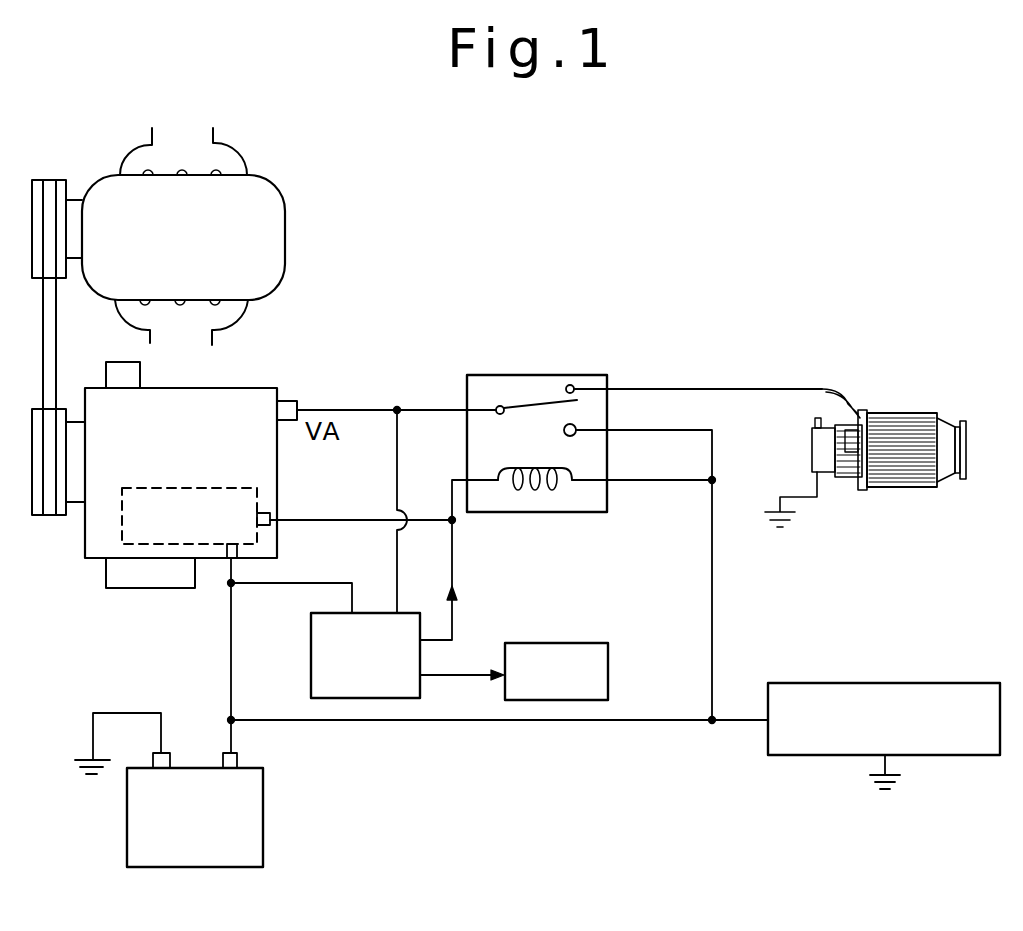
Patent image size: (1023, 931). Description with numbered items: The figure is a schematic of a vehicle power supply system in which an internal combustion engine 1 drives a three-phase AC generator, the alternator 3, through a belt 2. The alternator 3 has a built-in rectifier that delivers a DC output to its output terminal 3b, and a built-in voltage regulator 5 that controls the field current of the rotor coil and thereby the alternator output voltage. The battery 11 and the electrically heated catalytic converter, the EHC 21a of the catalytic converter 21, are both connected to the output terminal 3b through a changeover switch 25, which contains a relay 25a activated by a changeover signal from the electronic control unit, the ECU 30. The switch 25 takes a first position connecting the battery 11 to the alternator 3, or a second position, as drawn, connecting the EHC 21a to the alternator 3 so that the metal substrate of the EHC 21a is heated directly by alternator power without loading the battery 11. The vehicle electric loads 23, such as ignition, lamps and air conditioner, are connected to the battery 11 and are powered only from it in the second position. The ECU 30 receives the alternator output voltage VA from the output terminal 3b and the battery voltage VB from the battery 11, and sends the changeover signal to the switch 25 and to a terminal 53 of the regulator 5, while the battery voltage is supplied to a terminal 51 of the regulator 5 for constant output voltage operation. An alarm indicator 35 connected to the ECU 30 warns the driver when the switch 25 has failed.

The internal combustion engine 1 is at (188, 249).
The belt 2 is at (56, 340).
The alternator 3 is at (190, 452).
The output terminal 3b is at (290, 400).
The voltage regulator 5 is at (193, 537).
The terminal of the regulator 53 is at (258, 512).
The terminal of the regulator 51 is at (238, 560).
The changeover switch 25 is at (540, 442).
The relay 25a is at (577, 503).
The catalytic converter 21 is at (865, 442).
The electrically heated catalytic converter 21a is at (838, 477).
The electric loads 23 is at (893, 683).
The electronic control unit 30 is at (311, 653).
The alarm indicator 35 is at (608, 672).
The battery 11 is at (263, 815).